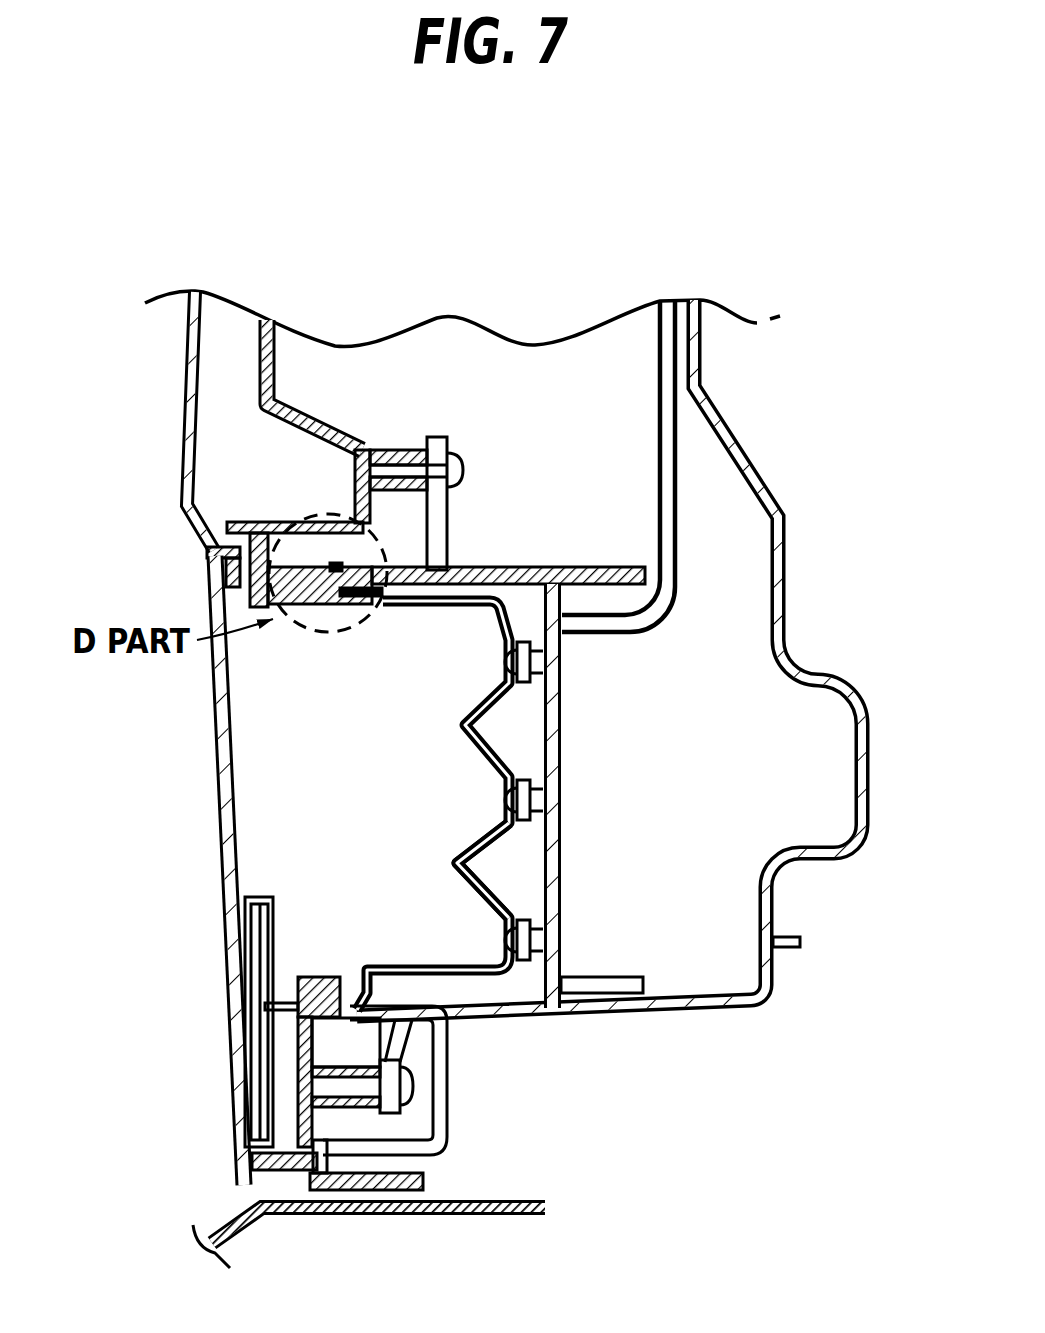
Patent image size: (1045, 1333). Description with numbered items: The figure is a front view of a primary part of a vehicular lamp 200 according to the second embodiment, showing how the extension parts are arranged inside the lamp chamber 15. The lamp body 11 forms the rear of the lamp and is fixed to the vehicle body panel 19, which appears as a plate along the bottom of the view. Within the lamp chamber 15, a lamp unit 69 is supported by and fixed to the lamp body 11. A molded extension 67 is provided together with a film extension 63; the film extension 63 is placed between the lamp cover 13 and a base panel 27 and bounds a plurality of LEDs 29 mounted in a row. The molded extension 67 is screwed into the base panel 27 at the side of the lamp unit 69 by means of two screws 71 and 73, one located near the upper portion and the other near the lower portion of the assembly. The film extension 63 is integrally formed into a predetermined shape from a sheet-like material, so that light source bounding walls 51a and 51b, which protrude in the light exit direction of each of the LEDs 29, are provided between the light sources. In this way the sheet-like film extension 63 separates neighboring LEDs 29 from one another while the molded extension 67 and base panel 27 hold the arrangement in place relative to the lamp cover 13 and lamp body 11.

The vehicular lamp 200 is at (527, 292).
The lamp body 11 is at (796, 506).
The lamp cover 13 is at (180, 383).
The lamp chamber 15 is at (255, 790).
The vehicle body panel 19 is at (507, 1198).
The base panel 27 is at (605, 555).
The LEDs 29 is at (503, 663).
The light source bounding wall 51a is at (463, 721).
The light source bounding wall 51b is at (455, 866).
The film extension 63 is at (449, 883).
The molded extension 67 is at (266, 439).
The lamp unit 69 is at (310, 758).
The screw 71 is at (468, 450).
The screw 73 is at (413, 1081).